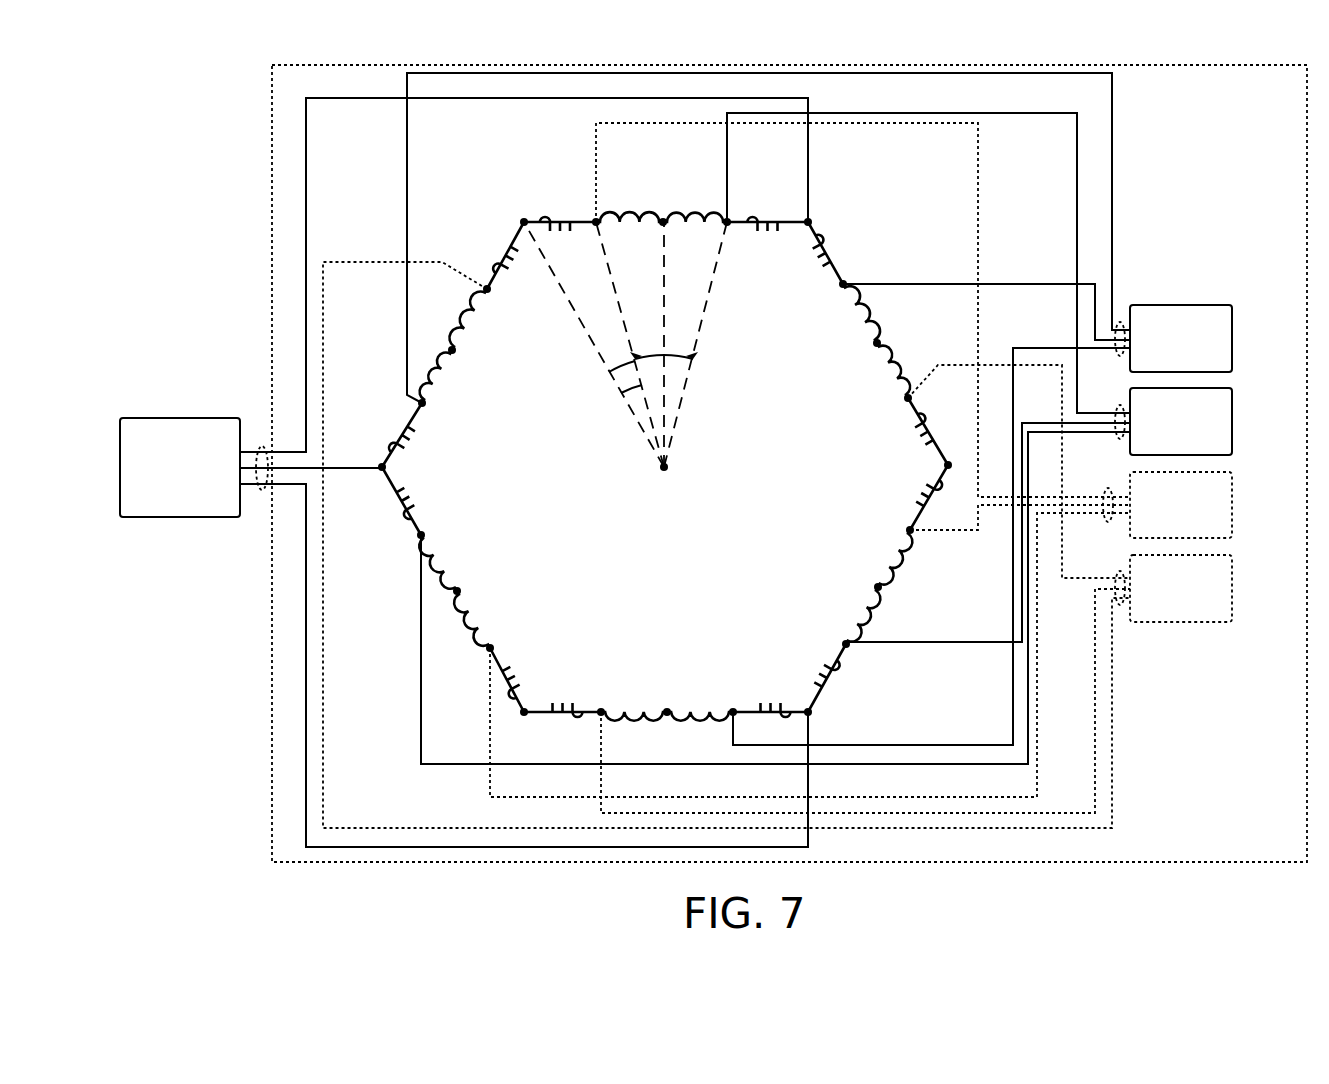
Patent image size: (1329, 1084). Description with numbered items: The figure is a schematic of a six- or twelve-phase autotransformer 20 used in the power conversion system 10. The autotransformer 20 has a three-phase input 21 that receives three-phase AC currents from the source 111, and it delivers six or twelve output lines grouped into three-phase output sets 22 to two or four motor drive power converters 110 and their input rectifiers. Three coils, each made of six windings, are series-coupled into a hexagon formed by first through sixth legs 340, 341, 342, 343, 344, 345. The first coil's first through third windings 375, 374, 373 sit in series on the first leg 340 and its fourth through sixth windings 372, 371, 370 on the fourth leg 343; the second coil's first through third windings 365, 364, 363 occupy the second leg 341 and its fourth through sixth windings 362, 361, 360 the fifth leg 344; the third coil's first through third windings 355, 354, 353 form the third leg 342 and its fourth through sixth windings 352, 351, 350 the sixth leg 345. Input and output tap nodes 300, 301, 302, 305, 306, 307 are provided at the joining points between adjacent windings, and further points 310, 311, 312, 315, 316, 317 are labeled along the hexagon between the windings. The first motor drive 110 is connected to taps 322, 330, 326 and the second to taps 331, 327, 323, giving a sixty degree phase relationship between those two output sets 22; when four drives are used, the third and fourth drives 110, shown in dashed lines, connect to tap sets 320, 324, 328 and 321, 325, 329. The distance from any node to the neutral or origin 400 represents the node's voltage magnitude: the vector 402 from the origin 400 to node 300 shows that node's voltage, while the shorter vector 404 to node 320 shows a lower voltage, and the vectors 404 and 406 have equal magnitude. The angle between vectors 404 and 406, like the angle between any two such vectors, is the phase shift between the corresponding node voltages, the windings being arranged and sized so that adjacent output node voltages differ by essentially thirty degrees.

The power conversion system 10 is at (272, 84).
The autotransformer 20 is at (388, 245).
The three-phase input 21 is at (260, 490).
The three-phase outputs 22 is at (1120, 322).
The motor drive power converter 110 is at (1232, 338).
The three-phase AC source 111 is at (185, 418).
The tap node 300 is at (524, 218).
The tap node 301 is at (524, 712).
The tap node 302 is at (945, 466).
The tap node 305 is at (812, 222).
The tap node 306 is at (380, 465).
The tap node 307 is at (812, 713).
The tap node 310 is at (666, 226).
The tap node 311 is at (460, 590).
The tap node 312 is at (874, 588).
The tap node 315 is at (873, 346).
The tap node 316 is at (456, 352).
The tap node 317 is at (665, 708).
The output terminal tap 320 is at (596, 226).
The output terminal tap 321 is at (492, 292).
The tap 322 is at (432, 410).
The tap 323 is at (418, 537).
The output terminal tap 324 is at (492, 645).
The output terminal tap 325 is at (598, 709).
The tap 326 is at (730, 708).
The tap 327 is at (842, 645).
The output terminal tap 328 is at (913, 538).
The output terminal tap 329 is at (905, 401).
The tap 330 is at (840, 288).
The tap 331 is at (730, 226).
The first leg 340 is at (830, 238).
The second leg 341 is at (905, 533).
The third leg 342 is at (610, 700).
The fourth leg 343 is at (440, 545).
The fifth leg 344 is at (430, 397).
The sixth leg 345 is at (710, 218).
The sixth winding of third coil 350 is at (770, 218).
The fifth winding of third coil 351 is at (626, 226).
The fourth winding of third coil 352 is at (550, 218).
The third winding of third coil 353 is at (568, 718).
The second winding of third coil 354 is at (673, 733).
The first winding of third coil 355 is at (755, 708).
The sixth winding of second coil 360 is at (490, 262).
The fifth winding of second coil 361 is at (460, 320).
The fourth winding of second coil 362 is at (390, 443).
The third winding of second coil 363 is at (835, 690).
The second winding of second coil 364 is at (863, 630).
The first winding of second coil 365 is at (945, 498).
The sixth winding of first coil 370 is at (395, 505).
The fifth winding of first coil 371 is at (462, 622).
The fourth winding of first coil 372 is at (530, 680).
The third winding of first coil 373 is at (930, 445).
The second winding of first coil 374 is at (892, 340).
The first winding of first coil 375 is at (850, 272).
The neutral (origin) 400 is at (664, 471).
The vector 402 is at (570, 315).
The vector 404 is at (622, 393).
The vector 406 is at (690, 375).